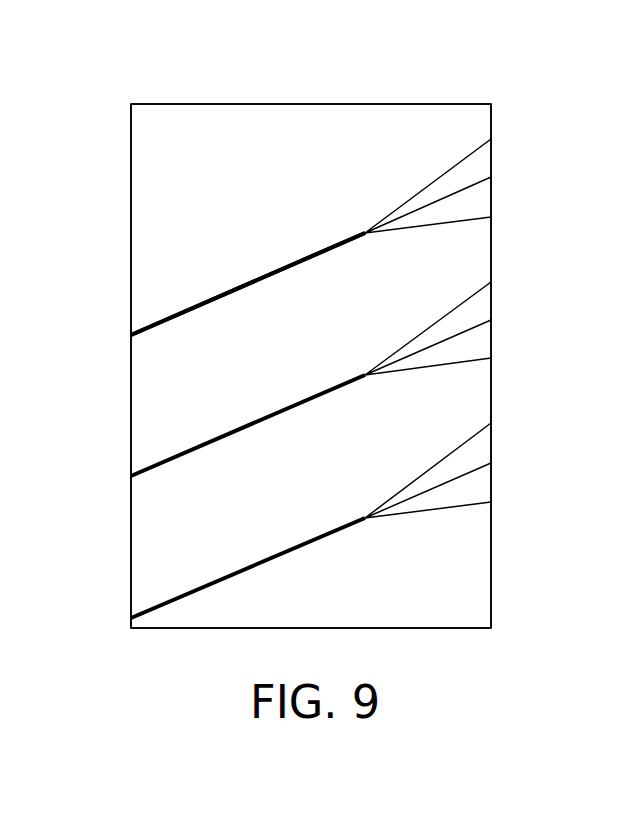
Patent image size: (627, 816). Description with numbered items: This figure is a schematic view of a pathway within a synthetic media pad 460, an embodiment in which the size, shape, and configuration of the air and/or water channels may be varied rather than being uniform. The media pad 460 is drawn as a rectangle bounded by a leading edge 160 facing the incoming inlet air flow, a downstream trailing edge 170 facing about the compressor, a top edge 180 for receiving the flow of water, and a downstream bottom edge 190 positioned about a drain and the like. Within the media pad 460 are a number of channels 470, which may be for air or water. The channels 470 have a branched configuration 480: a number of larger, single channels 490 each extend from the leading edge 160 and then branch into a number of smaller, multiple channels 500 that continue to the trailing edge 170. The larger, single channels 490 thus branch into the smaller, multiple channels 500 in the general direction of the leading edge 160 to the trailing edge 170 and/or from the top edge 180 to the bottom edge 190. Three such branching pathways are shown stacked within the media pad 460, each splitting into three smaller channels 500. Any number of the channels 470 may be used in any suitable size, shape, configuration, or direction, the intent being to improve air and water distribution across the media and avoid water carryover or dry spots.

The synthetic media pad 460 is at (167, 68).
The top edge 180 is at (432, 104).
The bottom edge 190 is at (430, 628).
The leading edge 160 is at (131, 365).
The trailing edge 170 is at (491, 235).
The channels 470 is at (255, 269).
The branched configuration 480 is at (338, 242).
The larger, single channels 490 is at (181, 458).
The smaller, multiple channels 500 is at (400, 373).